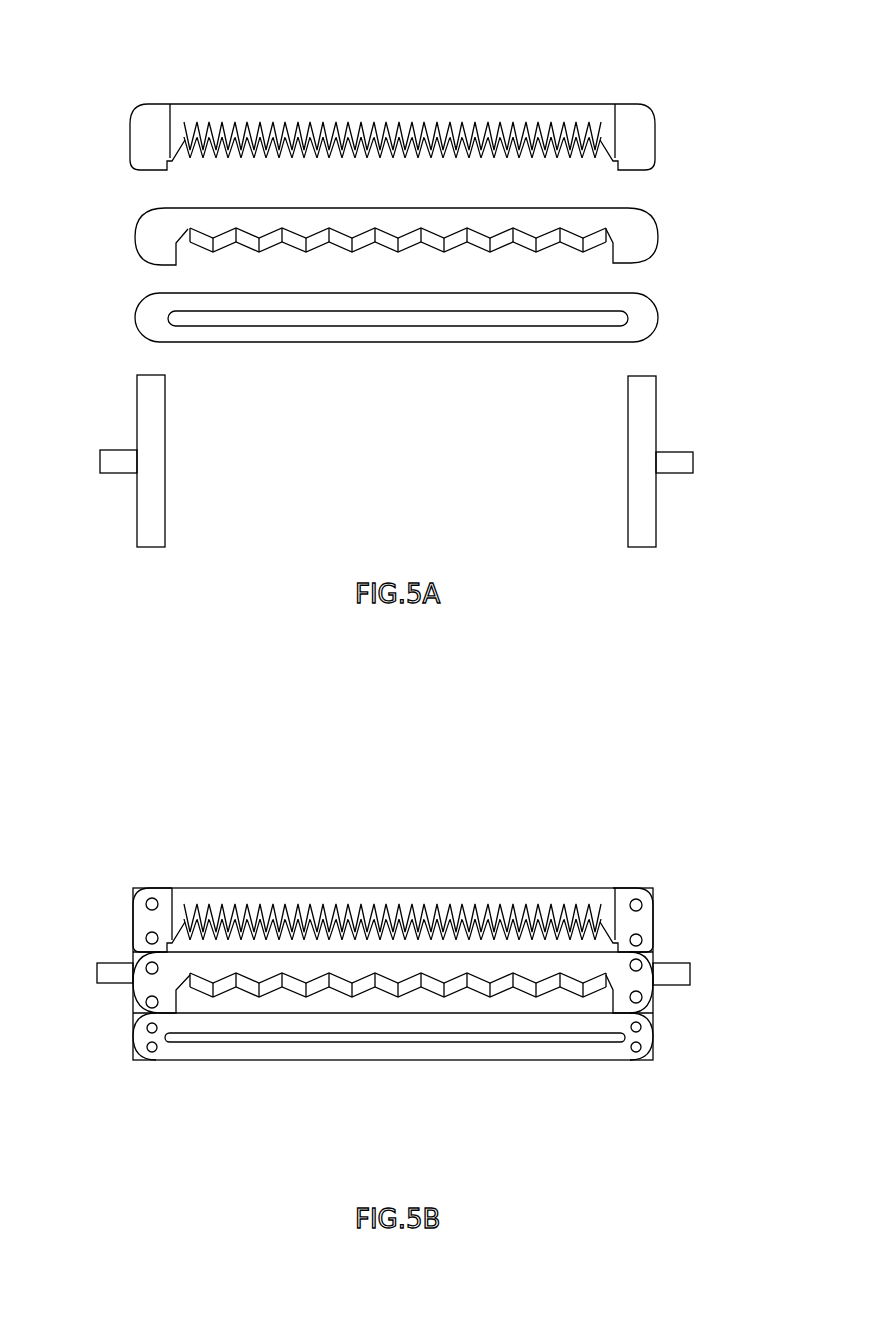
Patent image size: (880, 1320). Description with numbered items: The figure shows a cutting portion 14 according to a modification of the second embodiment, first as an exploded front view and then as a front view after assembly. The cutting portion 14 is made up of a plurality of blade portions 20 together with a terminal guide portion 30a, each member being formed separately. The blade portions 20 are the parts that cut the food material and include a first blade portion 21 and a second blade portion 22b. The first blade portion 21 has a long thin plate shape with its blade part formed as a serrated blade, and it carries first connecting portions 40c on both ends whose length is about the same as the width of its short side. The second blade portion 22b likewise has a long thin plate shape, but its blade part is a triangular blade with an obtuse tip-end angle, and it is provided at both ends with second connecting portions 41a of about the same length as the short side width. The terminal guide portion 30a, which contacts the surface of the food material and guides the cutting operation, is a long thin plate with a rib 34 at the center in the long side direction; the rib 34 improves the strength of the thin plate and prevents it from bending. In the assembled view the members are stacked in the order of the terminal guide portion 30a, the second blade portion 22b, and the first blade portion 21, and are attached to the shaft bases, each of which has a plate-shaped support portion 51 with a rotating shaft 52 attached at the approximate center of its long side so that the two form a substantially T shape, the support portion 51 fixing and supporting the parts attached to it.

In FIG. 5B, the cutting portion 14 is at (665, 1120).
In FIG. 5A, the blade portions 20 is at (276, 122).
In FIG. 5B, the blade portions 20 is at (276, 905).
In FIG. 5A, the first blade portion 21 is at (490, 120).
In FIG. 5B, the first blade portion 21 is at (490, 900).
In FIG. 5A, the second blade portion 22b is at (488, 228).
In FIG. 5B, the second blade portion 22b is at (470, 967).
In FIG. 5A, the terminal guide portion 30a is at (430, 331).
In FIG. 5B, the terminal guide portion 30a is at (498, 1053).
In FIG. 5A, the rib 34 is at (326, 323).
In FIG. 5B, the rib 34 is at (232, 1035).
In FIG. 5A, the first connecting portions 40c is at (147, 156).
In FIG. 5B, the first connecting portions 40c is at (137, 918).
In FIG. 5A, the second connecting portions 41a is at (152, 247).
In FIG. 5B, the second connecting portions 41a is at (140, 985).
In FIG. 5A, the support portion 51 is at (153, 428).
In FIG. 5B, the support portion 51 is at (137, 1012).
In FIG. 5A, the rotating shaft 52 is at (105, 458).
In FIG. 5B, the rotating shaft 52 is at (97, 980).